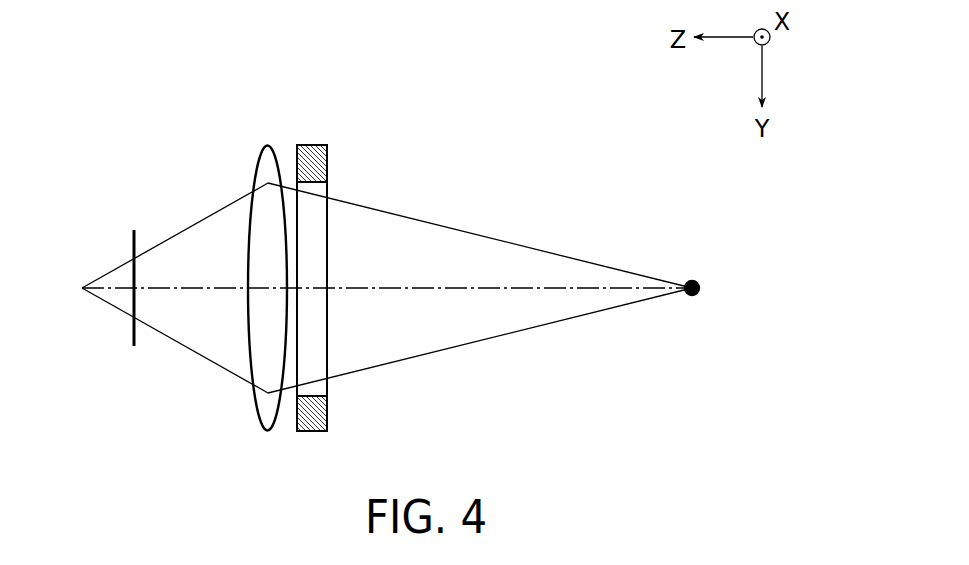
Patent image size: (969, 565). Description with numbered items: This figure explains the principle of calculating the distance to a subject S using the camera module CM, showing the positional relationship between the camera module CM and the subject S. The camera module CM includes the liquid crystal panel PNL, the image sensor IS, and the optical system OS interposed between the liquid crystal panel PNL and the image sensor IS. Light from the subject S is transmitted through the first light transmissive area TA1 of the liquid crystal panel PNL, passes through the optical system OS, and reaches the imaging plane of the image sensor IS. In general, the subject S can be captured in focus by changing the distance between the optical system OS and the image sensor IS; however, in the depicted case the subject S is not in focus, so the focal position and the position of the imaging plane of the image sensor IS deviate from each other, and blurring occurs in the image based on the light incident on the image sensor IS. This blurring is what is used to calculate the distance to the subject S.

The camera module CM is at (175, 404).
The image sensor IS is at (125, 336).
The optical system OS is at (268, 146).
The liquid crystal panel PNL is at (341, 138).
The first light transmissive area TA1 is at (328, 312).
The subject S is at (692, 280).